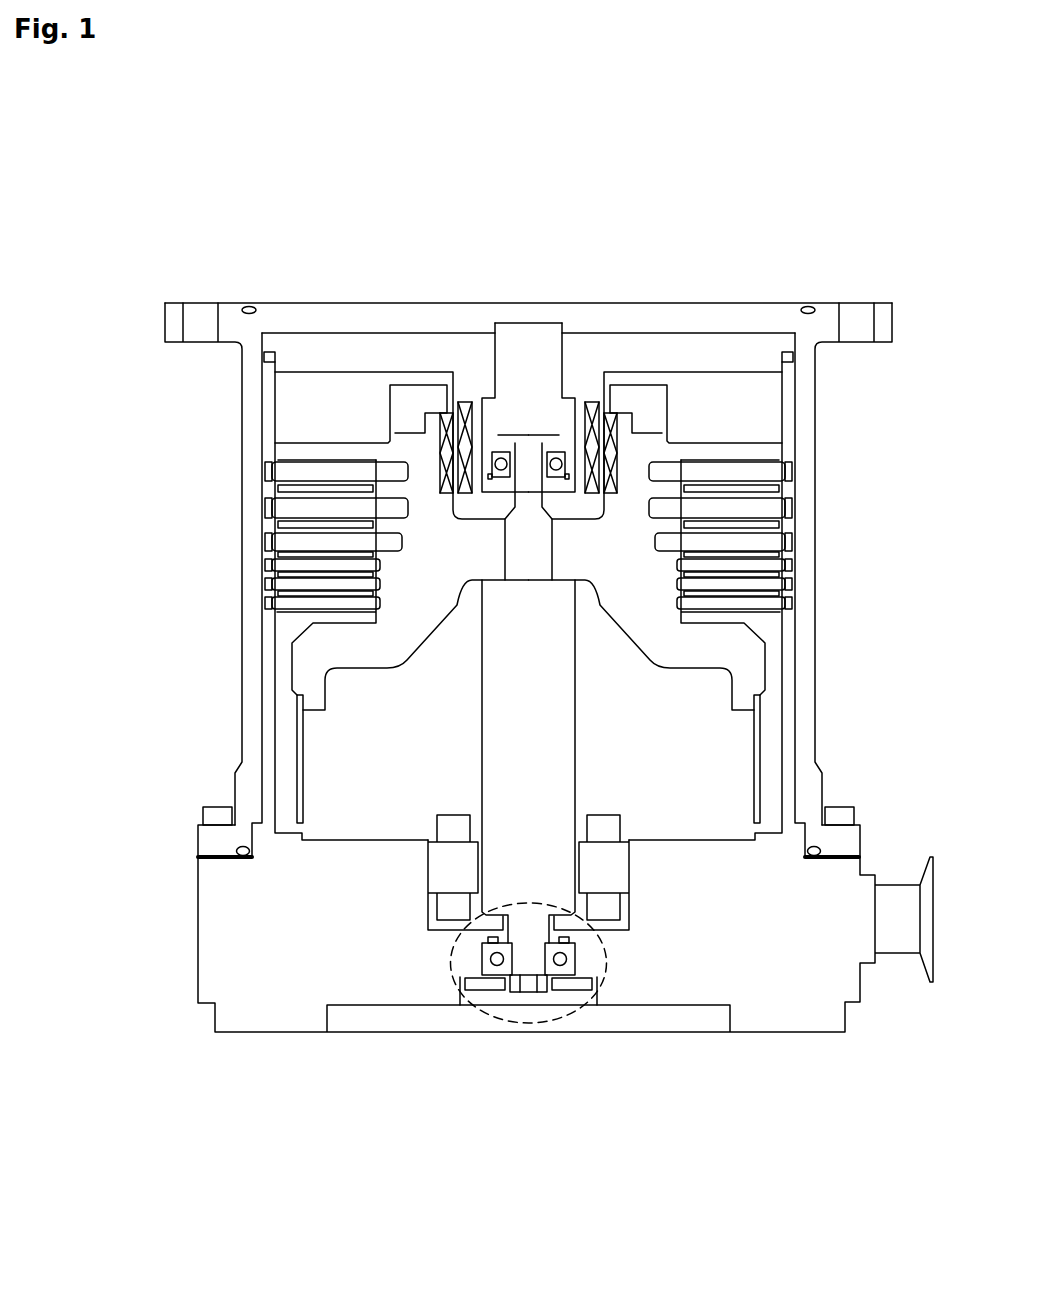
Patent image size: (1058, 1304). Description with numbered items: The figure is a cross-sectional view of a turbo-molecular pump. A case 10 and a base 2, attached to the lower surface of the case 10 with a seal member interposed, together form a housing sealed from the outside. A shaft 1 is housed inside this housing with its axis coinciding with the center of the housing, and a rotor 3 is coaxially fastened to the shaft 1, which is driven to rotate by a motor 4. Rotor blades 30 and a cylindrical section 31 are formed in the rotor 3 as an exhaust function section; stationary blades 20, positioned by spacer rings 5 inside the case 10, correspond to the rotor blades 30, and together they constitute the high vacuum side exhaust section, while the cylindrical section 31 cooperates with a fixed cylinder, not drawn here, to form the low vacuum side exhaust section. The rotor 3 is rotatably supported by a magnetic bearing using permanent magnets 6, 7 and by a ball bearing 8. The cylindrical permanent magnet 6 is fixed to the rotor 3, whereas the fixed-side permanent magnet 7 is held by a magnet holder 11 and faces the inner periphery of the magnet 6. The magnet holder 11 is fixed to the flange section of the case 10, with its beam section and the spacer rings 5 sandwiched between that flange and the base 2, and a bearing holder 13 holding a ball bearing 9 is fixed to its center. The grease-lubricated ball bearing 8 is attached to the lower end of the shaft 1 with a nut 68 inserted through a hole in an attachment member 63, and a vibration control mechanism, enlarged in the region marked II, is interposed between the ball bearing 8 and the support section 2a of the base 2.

The shaft 1 is at (515, 756).
The base 2 is at (776, 985).
The support section 2a is at (488, 934).
The rotor 3 is at (720, 647).
The motor 4 is at (608, 865).
The spacer rings 5 is at (789, 502).
The permanent magnet 6 is at (445, 417).
The permanent magnet 7 is at (460, 403).
The ball bearing 8 is at (502, 975).
The ball bearing 9 is at (502, 455).
The case 10 is at (804, 560).
The magnet holder 11 is at (618, 347).
The bearing holder 13 is at (549, 332).
The stationary blades 20 is at (283, 507).
The rotor blades 30 is at (303, 452).
The cylindrical section 31 is at (297, 724).
The attachment member 63 is at (574, 985).
The nut 68 is at (525, 982).
The section II is at (598, 955).